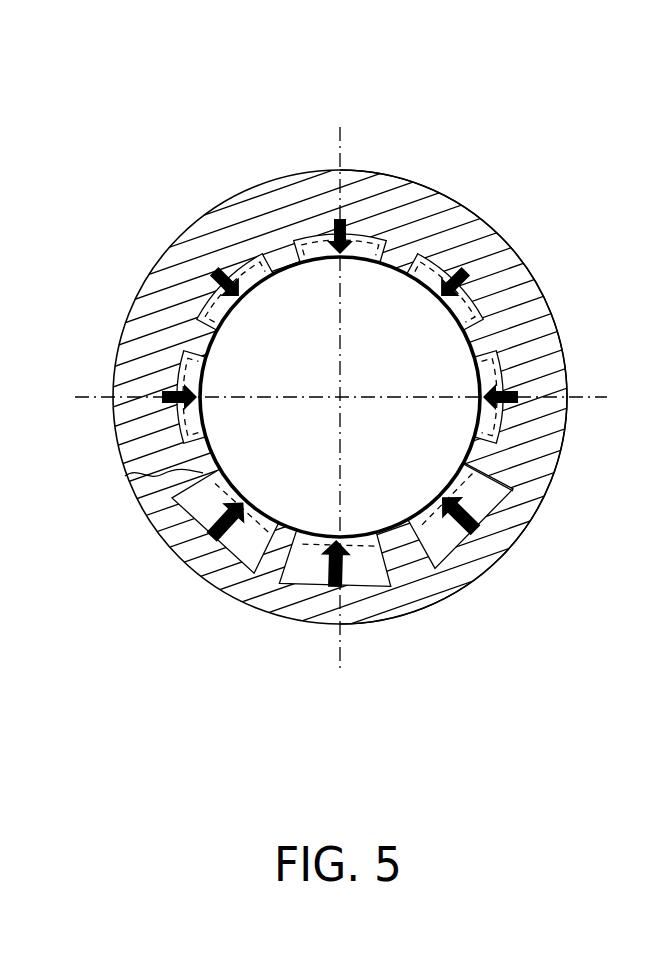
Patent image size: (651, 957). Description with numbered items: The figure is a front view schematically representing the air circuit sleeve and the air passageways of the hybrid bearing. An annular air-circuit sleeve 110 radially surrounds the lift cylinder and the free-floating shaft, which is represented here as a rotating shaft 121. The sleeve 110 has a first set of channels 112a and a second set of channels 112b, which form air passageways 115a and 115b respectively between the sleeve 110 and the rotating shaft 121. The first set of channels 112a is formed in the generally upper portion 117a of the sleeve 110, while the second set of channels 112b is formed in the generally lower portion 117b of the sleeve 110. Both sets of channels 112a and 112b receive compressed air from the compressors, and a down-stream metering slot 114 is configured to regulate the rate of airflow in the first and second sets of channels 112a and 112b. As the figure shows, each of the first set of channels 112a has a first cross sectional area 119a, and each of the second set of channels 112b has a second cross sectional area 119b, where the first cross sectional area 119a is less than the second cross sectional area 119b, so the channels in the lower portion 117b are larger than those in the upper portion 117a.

The air-circuit sleeve 110 is at (120, 343).
The first set of channels 112a is at (478, 390).
The second set of channels 112b is at (427, 500).
The metering slot 114 is at (477, 463).
The air passageways 115a is at (183, 351).
The air passageways 115b is at (304, 591).
The upper portion 117a is at (538, 152).
The lower portion 117b is at (538, 675).
The first cross sectional area 119a is at (317, 240).
The second cross sectional area 119b is at (203, 507).
The rotating shaft 121 is at (250, 446).